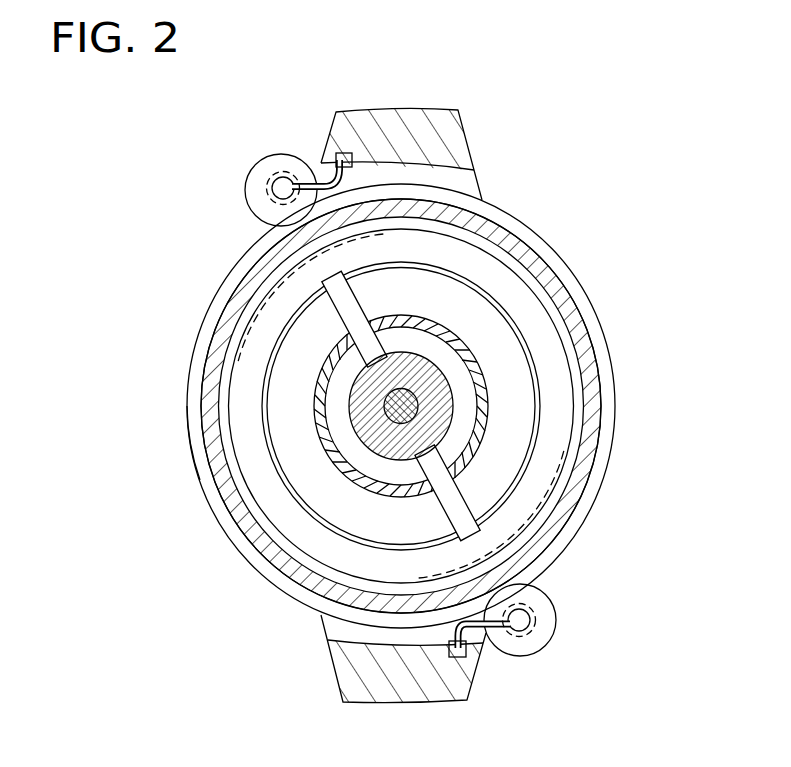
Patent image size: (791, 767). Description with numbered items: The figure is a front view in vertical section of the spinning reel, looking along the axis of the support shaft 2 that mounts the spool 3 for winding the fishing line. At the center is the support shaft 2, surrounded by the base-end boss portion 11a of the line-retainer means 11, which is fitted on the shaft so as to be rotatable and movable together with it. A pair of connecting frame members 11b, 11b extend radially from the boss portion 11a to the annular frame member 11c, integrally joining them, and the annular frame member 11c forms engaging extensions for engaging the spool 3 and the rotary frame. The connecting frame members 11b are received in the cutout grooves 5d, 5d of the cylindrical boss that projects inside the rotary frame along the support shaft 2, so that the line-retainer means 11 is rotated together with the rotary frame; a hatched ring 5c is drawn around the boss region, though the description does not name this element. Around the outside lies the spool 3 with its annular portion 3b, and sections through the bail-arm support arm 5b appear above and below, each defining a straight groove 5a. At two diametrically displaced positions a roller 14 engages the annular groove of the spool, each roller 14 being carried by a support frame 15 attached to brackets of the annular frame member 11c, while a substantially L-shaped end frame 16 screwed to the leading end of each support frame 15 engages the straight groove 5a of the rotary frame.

The support shaft 2 is at (415, 404).
The spool 3 is at (268, 582).
The front annular portion 3b is at (191, 437).
The straight groove 5a is at (383, 163).
The bail-arm support arm 5b is at (460, 135).
The hub ring 5c is at (475, 360).
The cutout grooves 5d is at (347, 338).
The line-retainer means 11 is at (533, 290).
The base-end boss portion 11a is at (358, 425).
The connecting frame members 11b is at (342, 310).
The annular frame member 11c is at (555, 353).
The roller 14 is at (252, 190).
The support frame 15 is at (316, 228).
The end frame 16 is at (309, 165).